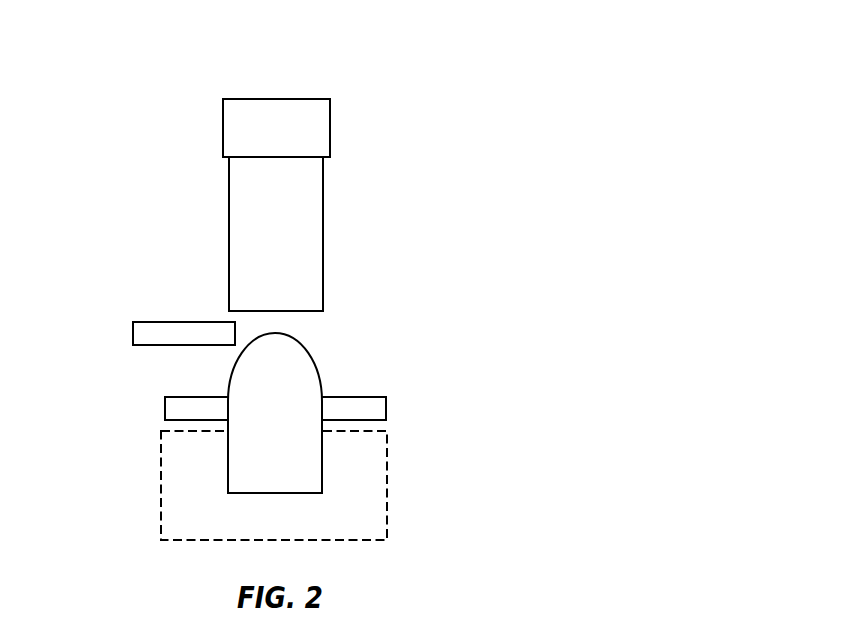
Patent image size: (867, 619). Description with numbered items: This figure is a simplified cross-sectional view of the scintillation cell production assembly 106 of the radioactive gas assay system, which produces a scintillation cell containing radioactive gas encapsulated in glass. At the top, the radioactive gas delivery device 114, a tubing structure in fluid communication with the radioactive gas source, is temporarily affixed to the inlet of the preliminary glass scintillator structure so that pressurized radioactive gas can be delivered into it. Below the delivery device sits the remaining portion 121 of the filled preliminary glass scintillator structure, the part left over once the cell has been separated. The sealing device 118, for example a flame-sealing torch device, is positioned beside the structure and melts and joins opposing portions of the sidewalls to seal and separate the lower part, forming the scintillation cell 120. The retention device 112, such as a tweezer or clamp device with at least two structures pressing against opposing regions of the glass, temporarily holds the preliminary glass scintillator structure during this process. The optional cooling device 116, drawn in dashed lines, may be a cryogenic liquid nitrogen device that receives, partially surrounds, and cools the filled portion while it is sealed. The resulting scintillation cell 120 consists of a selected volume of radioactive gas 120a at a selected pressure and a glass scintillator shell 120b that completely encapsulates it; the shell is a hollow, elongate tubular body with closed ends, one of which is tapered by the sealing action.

The scintillation cell production assembly 106 is at (105, 102).
The radioactive gas delivery device 114 is at (250, 128).
The remaining portion 121 is at (295, 233).
The sealing device 118 is at (147, 333).
The retention device 112 is at (365, 404).
The cooling device 116 is at (162, 488).
The scintillation cell 120 is at (400, 449).
The volume of radioactive gas 120a is at (275, 430).
The glass scintillator shell 120b is at (282, 493).